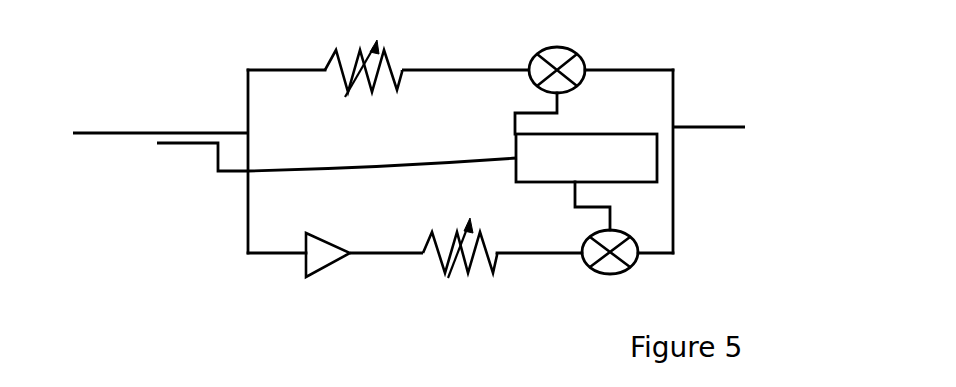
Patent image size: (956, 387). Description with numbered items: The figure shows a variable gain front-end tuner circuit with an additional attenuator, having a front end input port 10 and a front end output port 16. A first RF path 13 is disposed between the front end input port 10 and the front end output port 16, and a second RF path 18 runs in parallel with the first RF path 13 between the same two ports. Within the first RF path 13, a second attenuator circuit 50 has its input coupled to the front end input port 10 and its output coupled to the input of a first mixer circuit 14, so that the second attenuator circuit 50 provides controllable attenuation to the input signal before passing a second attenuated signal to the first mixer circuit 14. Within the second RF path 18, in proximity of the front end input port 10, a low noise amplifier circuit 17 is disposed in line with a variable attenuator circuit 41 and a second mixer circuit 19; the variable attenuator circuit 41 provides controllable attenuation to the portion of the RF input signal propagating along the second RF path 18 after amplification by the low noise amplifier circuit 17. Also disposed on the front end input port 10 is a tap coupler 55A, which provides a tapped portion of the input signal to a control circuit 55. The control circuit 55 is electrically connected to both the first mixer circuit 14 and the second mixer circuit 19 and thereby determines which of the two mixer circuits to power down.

The front end input port 10 is at (127, 147).
The tap coupler 55A is at (173, 125).
The first RF path 13 is at (463, 70).
The second attenuator circuit 50 is at (372, 88).
The first mixer circuit 14 is at (582, 55).
The front end output port 16 is at (710, 127).
The control circuit 55 is at (586, 158).
The low noise amplifier circuit 17 is at (325, 278).
The second RF path 18 is at (403, 253).
The variable attenuator circuit 41 is at (472, 268).
The second mixer circuit 19 is at (618, 274).